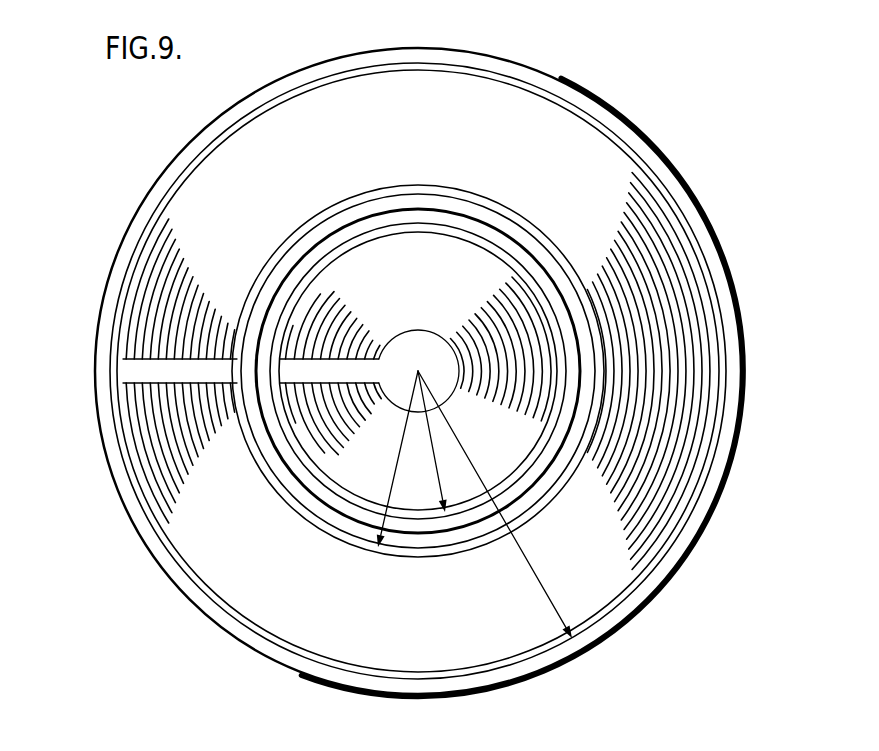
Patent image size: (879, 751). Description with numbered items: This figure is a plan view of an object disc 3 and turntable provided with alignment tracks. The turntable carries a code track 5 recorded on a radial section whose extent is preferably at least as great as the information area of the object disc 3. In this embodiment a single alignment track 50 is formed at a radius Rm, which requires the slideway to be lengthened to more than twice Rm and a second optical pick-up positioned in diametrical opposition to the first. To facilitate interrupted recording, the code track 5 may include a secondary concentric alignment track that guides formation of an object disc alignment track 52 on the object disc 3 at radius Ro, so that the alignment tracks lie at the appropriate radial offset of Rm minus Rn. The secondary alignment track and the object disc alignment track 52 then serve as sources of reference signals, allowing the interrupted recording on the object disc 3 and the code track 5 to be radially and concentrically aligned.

The code track 5 is at (163, 267).
The alignment track 50 is at (124, 261).
The object disc alignment track 52 is at (258, 379).
The object disc 3 is at (558, 391).
The radius Rn is at (401, 479).
The radius Ro is at (440, 477).
The radius Rm is at (530, 558).